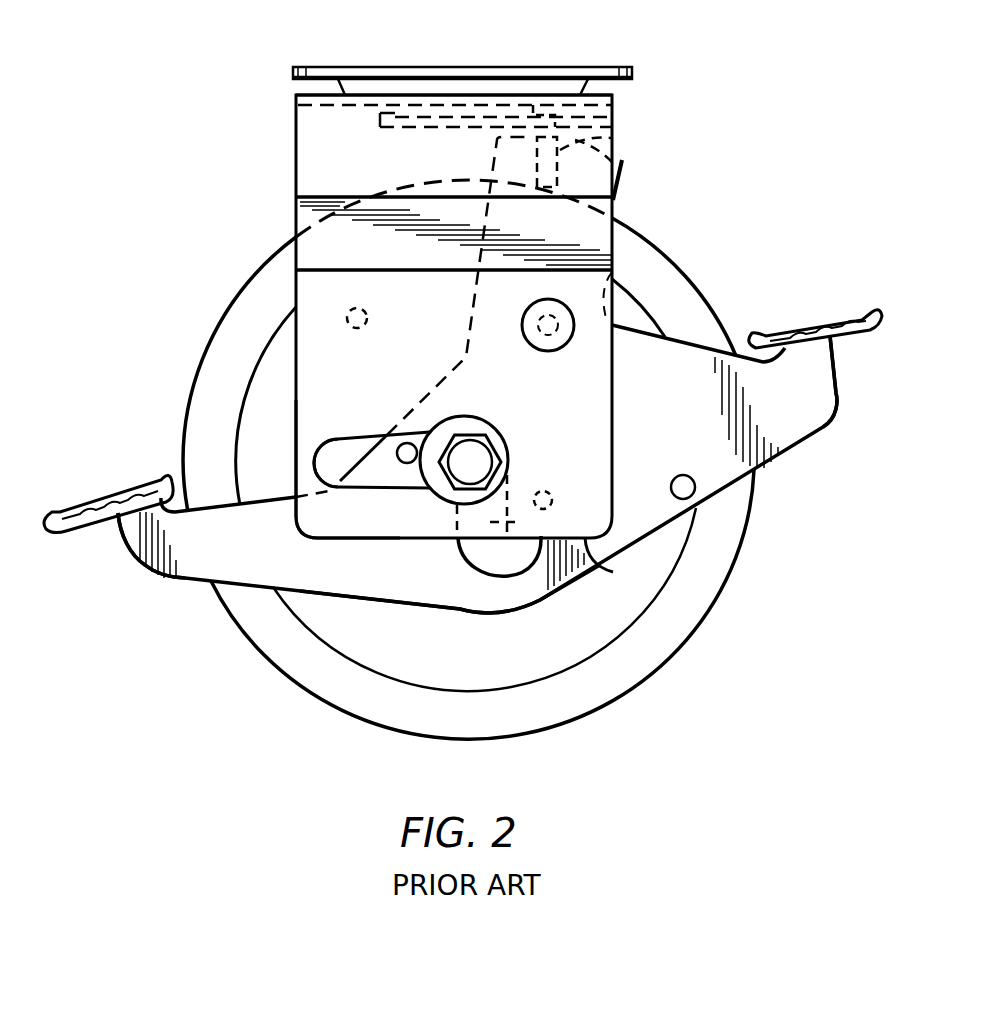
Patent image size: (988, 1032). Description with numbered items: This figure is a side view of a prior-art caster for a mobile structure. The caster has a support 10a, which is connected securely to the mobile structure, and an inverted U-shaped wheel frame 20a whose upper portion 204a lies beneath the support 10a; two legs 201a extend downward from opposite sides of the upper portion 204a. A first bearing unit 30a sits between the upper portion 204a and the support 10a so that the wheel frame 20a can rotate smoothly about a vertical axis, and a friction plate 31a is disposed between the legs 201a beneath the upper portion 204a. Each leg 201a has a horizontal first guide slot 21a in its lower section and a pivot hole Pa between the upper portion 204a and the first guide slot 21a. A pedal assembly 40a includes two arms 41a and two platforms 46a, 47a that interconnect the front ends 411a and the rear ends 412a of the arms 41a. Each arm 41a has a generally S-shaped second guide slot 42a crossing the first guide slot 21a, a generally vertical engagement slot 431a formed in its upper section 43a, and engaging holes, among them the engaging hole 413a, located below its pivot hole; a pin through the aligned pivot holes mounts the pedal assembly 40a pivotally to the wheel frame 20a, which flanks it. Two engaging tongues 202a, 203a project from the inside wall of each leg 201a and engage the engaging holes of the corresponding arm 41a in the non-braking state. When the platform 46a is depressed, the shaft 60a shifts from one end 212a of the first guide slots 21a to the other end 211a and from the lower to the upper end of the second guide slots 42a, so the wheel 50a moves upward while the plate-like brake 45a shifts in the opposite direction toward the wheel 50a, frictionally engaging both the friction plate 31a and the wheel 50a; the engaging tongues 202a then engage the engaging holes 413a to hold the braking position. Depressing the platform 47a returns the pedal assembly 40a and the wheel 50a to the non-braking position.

The support 10a is at (295, 68).
The inverted U-shaped wheel frame 20a is at (318, 137).
The legs 201a is at (312, 513).
The engaging tongue 202a is at (608, 570).
The engaging tongue 203a is at (367, 310).
The upper portion 204a is at (296, 95).
The first guide slot 21a is at (333, 442).
The other end of first guide slot 211a is at (488, 425).
The one end of first guide slot 212a is at (345, 440).
The first bearing unit 30a is at (522, 88).
The friction plate 31a is at (382, 113).
The pedal assembly 40a is at (198, 585).
The arm 41a is at (500, 608).
The front ends of the arms 411a is at (130, 560).
The rear ends of the arms 412a is at (838, 393).
The engaging hole 413a is at (570, 486).
The second guide slot 42a is at (478, 548).
The upper section of the arm 43a is at (621, 163).
The engagement slot 431a is at (616, 188).
The plate-like brake 45a is at (614, 128).
The platform 46a is at (76, 502).
The platform 47a is at (830, 320).
The wheel 50a is at (735, 541).
The shaft 60a is at (505, 462).
The pivot hole Pa is at (535, 330).